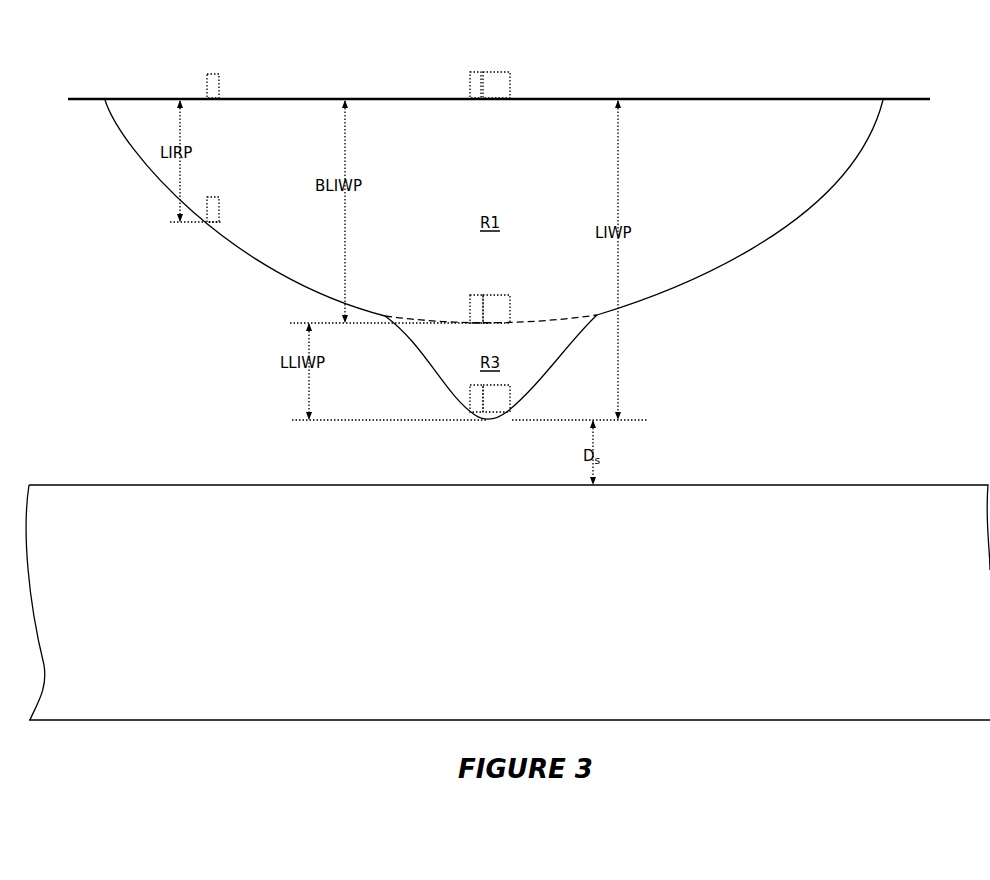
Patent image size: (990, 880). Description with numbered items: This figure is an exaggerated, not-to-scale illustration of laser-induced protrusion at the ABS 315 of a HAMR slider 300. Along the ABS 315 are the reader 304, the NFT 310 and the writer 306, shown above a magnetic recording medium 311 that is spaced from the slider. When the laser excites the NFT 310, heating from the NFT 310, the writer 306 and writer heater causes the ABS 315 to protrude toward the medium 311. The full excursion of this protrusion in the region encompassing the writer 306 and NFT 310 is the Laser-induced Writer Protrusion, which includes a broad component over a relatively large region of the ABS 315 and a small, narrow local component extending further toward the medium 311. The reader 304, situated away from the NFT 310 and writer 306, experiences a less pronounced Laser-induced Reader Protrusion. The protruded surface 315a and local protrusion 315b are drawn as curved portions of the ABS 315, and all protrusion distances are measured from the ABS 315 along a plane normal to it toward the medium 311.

The HAMR slider 300 is at (515, 219).
The reader 304 is at (221, 79).
The writer 306 is at (512, 81).
The NFT 310 is at (468, 83).
The magnetic recording medium 311 is at (886, 484).
The ABS 315 is at (905, 102).
The first curved surface portion 315a is at (780, 231).
The second curved surface portion 315b is at (558, 359).